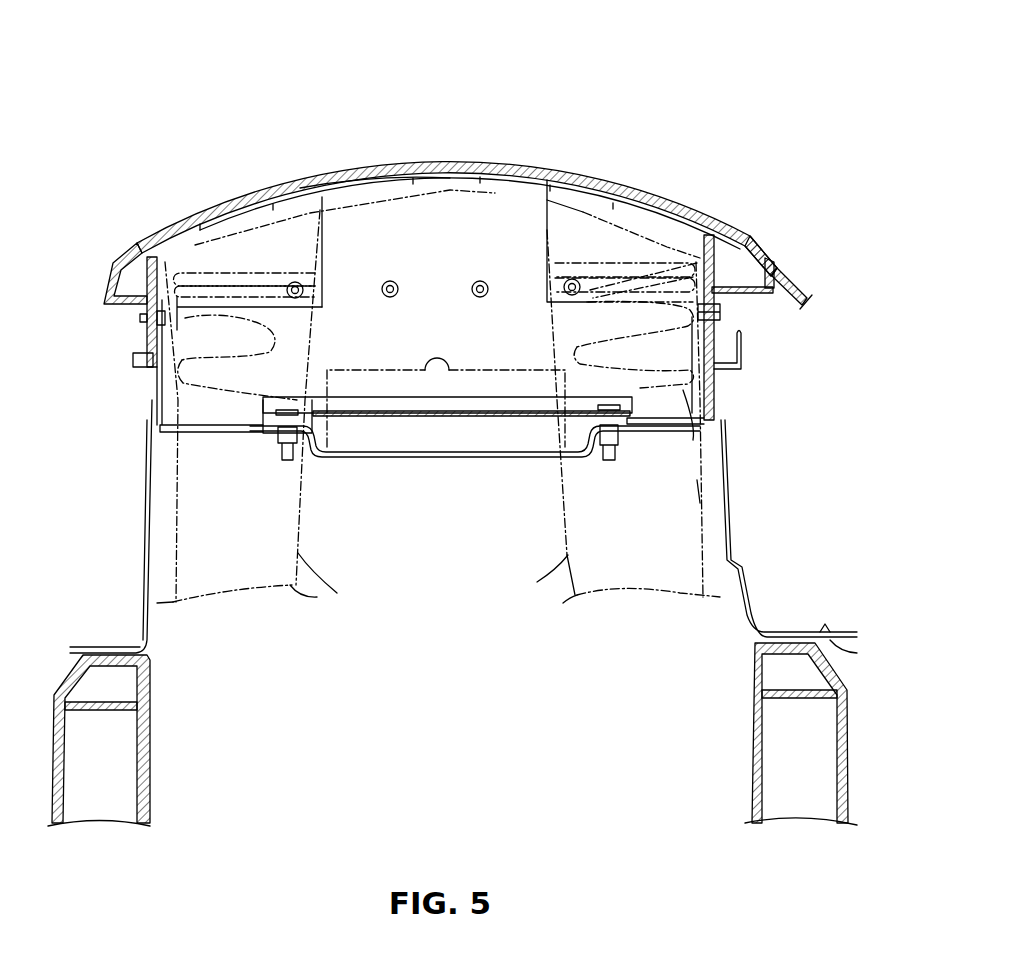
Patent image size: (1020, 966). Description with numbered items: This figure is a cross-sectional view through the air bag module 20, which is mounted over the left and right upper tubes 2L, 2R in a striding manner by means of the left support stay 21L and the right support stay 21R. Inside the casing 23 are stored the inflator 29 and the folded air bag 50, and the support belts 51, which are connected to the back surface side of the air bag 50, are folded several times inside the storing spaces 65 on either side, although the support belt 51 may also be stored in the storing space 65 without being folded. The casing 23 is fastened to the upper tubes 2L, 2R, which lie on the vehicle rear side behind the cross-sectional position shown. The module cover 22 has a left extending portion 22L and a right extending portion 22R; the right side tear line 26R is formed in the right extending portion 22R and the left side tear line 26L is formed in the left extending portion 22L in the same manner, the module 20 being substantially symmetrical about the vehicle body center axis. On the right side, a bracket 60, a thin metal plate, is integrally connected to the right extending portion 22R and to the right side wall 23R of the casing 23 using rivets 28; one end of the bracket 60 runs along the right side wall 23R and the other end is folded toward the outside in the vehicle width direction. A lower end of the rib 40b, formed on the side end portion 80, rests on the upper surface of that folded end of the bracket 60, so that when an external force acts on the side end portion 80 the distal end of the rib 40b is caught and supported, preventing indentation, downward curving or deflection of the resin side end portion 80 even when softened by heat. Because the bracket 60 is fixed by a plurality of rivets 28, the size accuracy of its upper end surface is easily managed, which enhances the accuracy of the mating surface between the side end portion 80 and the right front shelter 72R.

The air bag module 20 is at (430, 147).
The module cover 22 is at (524, 175).
The casing 23 is at (495, 460).
The right side wall 23R is at (700, 503).
The left side tear line 26L is at (168, 262).
The right side tear line 26R is at (700, 236).
The rivet 28 is at (140, 320).
The inflator 29 is at (437, 372).
The rib 40b is at (764, 282).
The air bag 50 is at (374, 165).
The support belt 51 is at (337, 593).
The bracket 60 is at (768, 295).
The storing space 65 is at (322, 212).
The right front shelter 72R is at (796, 278).
The side end portion 80 is at (112, 257).
The left support stay 21L is at (147, 530).
The right support stay 21R is at (752, 527).
The left extending portion 22L is at (150, 360).
The right extending portion 22R is at (737, 362).
The upper tube 2L is at (150, 757).
The upper tube 2R is at (752, 762).